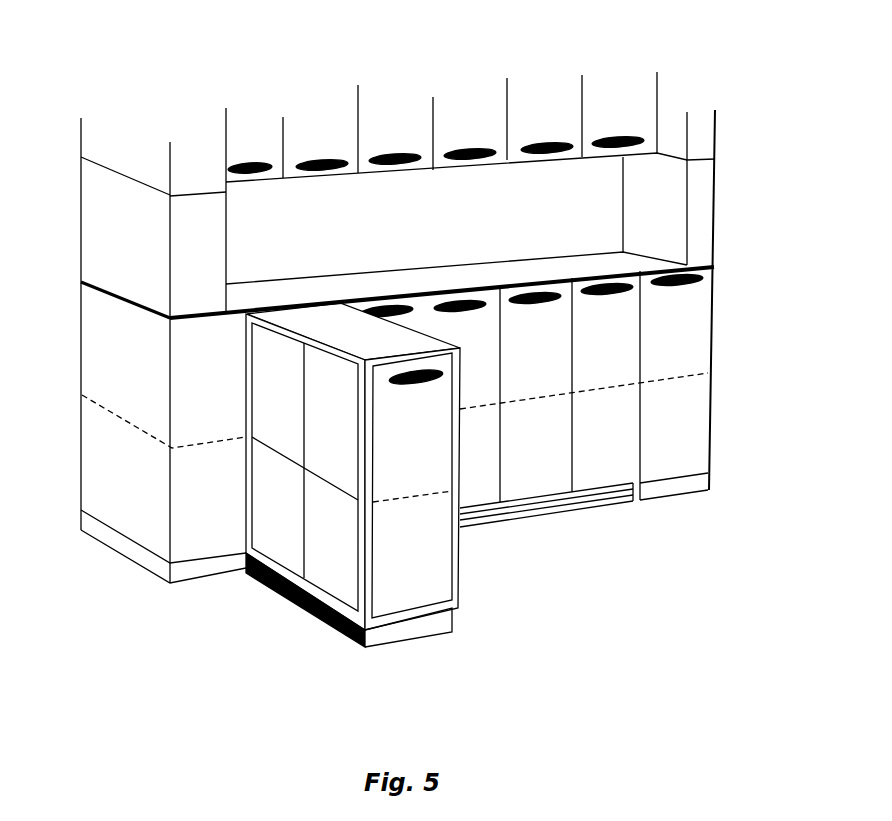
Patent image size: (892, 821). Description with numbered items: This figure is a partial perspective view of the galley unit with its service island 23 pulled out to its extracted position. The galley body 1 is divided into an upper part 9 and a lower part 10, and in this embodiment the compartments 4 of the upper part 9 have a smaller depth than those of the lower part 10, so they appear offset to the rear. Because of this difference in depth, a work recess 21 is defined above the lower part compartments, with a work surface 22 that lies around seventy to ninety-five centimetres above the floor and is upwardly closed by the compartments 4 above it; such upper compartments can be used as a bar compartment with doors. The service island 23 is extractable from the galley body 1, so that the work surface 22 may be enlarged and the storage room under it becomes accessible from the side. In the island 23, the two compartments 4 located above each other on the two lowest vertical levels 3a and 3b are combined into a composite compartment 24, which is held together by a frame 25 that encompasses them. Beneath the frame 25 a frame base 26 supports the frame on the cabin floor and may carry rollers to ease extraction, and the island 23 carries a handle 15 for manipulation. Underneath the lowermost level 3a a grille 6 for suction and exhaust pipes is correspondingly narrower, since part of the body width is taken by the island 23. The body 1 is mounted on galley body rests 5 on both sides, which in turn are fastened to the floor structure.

The galley body 1 is at (171, 79).
The upper part 9 is at (69, 131).
The lower part 10 is at (76, 343).
The lowest vertical level 3a is at (110, 523).
The second lowest vertical level 3b is at (113, 413).
The compartments 4 is at (320, 140).
The galley body rests 5 is at (162, 558).
The grille 6 is at (593, 497).
The handle 15 is at (453, 363).
The work recess 21 is at (410, 236).
The work surface 22 is at (338, 340).
The service island 23 is at (246, 626).
The composite compartment 24 is at (445, 543).
The frame 25 is at (457, 583).
The frame base 26 is at (438, 623).